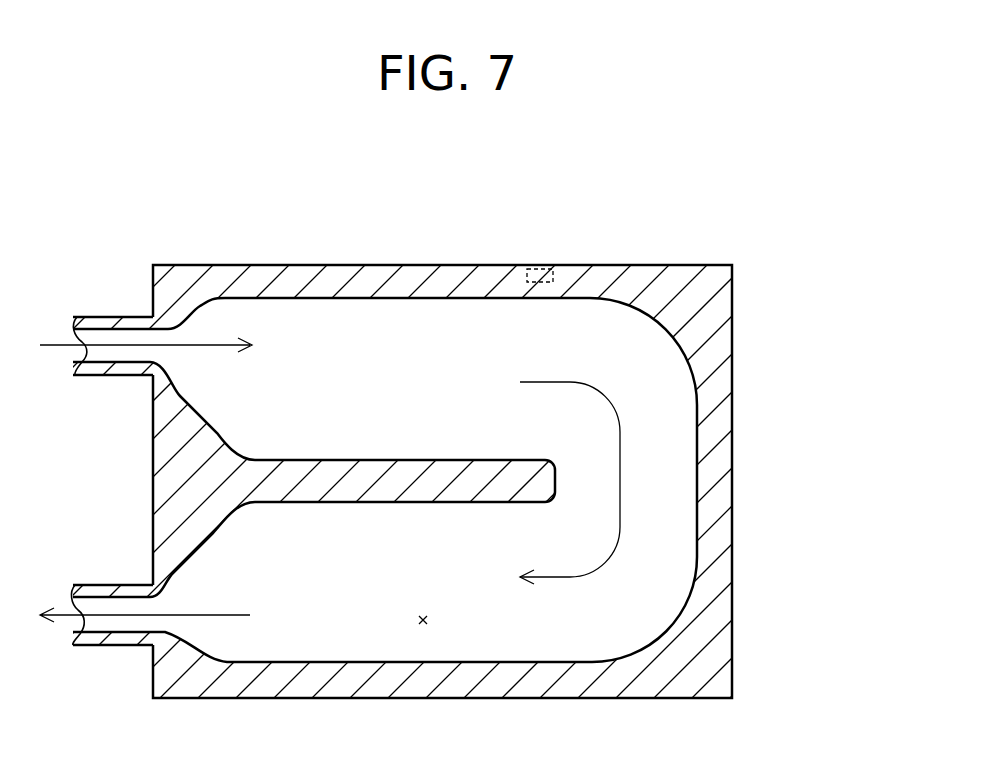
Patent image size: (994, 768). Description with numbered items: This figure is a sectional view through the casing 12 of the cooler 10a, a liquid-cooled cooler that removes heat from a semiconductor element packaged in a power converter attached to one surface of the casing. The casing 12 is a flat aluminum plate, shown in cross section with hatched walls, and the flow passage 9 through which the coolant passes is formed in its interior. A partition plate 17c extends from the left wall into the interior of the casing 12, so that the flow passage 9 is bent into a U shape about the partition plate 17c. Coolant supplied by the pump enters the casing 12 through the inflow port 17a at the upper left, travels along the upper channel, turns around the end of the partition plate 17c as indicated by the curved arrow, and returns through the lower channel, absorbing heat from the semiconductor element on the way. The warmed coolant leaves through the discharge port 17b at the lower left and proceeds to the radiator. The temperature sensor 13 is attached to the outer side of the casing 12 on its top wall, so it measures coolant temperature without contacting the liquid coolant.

The cooler 10a is at (177, 211).
The casing 12 is at (723, 419).
The temperature sensor 13 is at (536, 267).
The inflow port 17a is at (112, 377).
The discharge port 17b is at (112, 646).
The partition plate 17c is at (342, 487).
The flow passage 9 is at (422, 627).